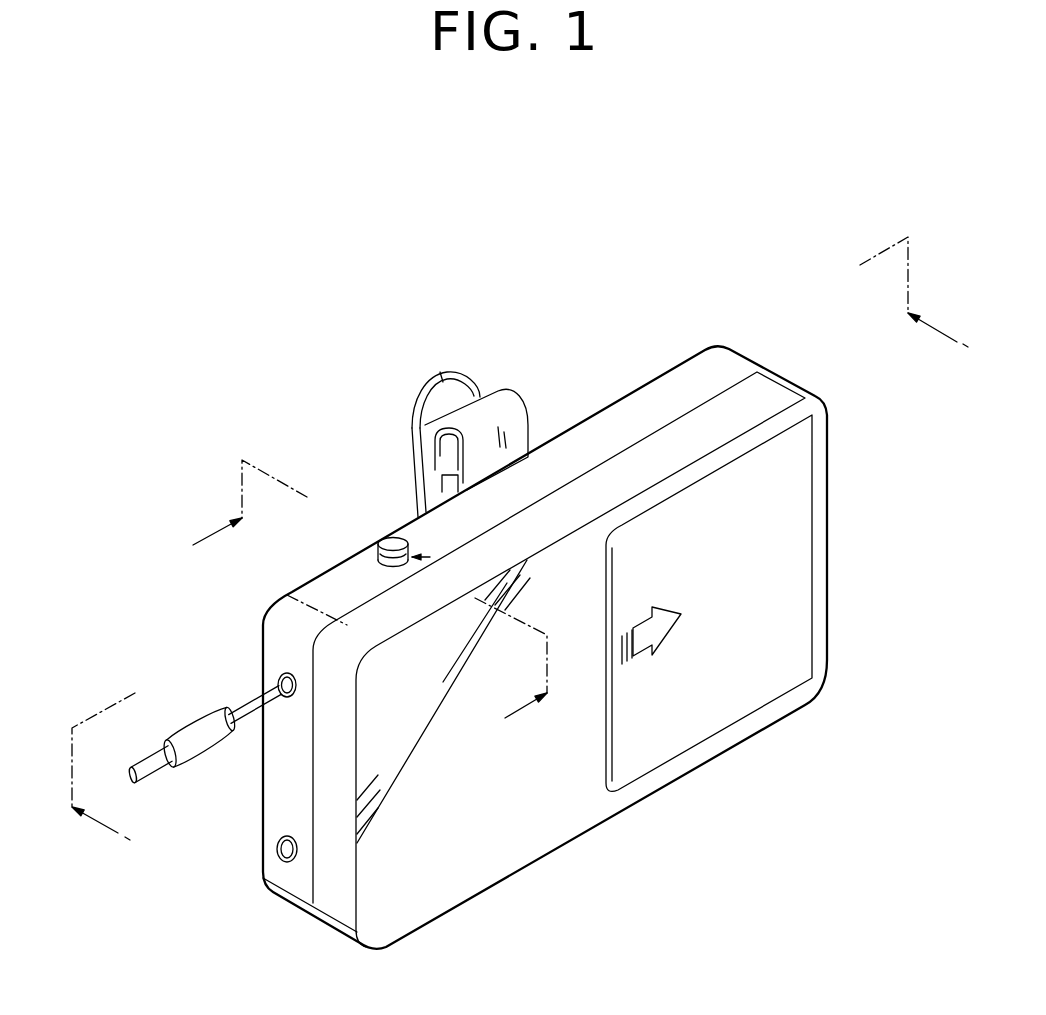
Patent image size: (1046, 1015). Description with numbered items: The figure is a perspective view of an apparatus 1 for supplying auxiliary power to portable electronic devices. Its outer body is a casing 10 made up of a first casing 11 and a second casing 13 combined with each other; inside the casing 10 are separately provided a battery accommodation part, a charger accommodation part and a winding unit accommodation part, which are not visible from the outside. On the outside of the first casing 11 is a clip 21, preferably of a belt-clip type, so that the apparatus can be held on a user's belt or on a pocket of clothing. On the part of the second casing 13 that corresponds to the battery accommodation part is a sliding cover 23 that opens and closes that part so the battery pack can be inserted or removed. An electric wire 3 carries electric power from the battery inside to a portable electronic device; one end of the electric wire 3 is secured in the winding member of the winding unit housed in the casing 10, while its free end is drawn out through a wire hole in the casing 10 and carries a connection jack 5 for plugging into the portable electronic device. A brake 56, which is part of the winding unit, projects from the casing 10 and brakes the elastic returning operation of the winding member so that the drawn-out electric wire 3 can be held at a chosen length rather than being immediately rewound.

The apparatus for supplying auxiliary power 1 is at (705, 276).
The casing 10 is at (853, 282).
The first casing 11 is at (722, 360).
The second casing 13 is at (767, 395).
The clip 21 is at (412, 467).
The sliding cover 23 is at (802, 647).
The brake 56 is at (372, 543).
The electric wire 3 is at (246, 702).
The connection jack 5 is at (204, 746).